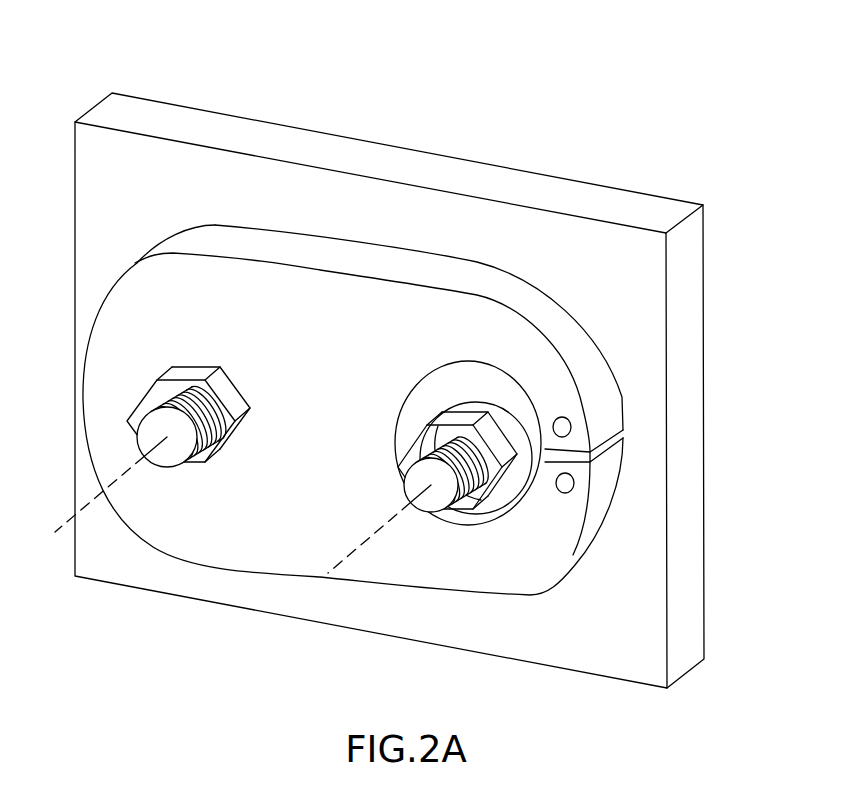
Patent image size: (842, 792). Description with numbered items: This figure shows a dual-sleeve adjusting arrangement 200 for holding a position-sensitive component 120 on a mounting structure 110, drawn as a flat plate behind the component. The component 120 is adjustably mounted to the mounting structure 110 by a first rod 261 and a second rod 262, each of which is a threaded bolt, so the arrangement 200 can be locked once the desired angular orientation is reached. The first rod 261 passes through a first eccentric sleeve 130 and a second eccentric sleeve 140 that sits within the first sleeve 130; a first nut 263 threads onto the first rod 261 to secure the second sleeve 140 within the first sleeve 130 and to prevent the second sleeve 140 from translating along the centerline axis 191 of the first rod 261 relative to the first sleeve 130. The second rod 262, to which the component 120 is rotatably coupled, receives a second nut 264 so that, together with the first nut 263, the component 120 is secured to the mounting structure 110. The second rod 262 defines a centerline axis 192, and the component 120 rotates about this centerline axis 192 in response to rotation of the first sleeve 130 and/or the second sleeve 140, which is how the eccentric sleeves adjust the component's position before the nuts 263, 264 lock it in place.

The dual-sleeve adjusting arrangement 200 is at (537, 124).
The mounting structure 110 is at (648, 280).
The position-sensitive component 120 is at (342, 295).
The first eccentric sleeve 130 is at (447, 382).
The second eccentric sleeve 140 is at (510, 425).
The centerline axis 191 is at (328, 573).
The centerline axis 192 is at (68, 520).
The first rod 261 is at (442, 503).
The second rod 262 is at (153, 437).
The first nut 263 is at (473, 505).
The second nut 264 is at (160, 390).